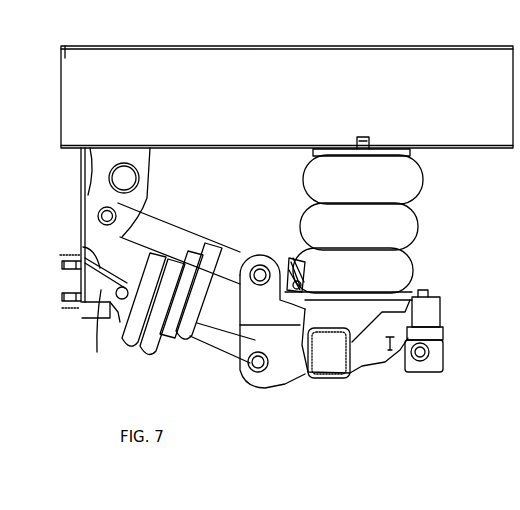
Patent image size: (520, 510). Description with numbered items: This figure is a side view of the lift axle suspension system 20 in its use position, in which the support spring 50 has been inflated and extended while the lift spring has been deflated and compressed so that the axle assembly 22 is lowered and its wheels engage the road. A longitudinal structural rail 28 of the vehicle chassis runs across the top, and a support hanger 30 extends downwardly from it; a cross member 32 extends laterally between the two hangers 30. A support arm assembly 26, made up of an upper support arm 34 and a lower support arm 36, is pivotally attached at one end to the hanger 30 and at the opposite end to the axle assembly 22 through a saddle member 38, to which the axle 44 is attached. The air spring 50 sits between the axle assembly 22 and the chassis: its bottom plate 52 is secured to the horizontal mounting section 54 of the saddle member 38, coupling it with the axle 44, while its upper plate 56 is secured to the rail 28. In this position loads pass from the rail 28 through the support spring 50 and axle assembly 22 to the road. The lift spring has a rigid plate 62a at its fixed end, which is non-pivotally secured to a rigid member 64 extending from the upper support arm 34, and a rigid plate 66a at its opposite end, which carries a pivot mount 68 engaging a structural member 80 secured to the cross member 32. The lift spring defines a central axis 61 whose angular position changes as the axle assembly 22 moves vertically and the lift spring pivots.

The lift axle suspension system 20 is at (147, 20).
The axle assembly 22 is at (372, 371).
The support arm assembly 26 is at (205, 360).
The structural rail 28 is at (371, 60).
The support hanger 30 is at (92, 197).
The cross member 32 is at (62, 309).
The upper support arm 34 is at (193, 240).
The lower support arm 36 is at (224, 356).
The saddle member 38 is at (271, 385).
The axle 44 is at (313, 375).
The support biasing member 50 is at (417, 223).
The bottom plate 52 is at (407, 288).
The horizontal mounting section 54 is at (385, 312).
The upper plate 56 is at (415, 160).
The central axis 61 is at (162, 343).
The rigid plate 62a is at (177, 262).
The rigid member 64 is at (212, 266).
The rigid plate 66a is at (117, 340).
The pivot mount 68 is at (102, 340).
The structural member 80 is at (88, 265).